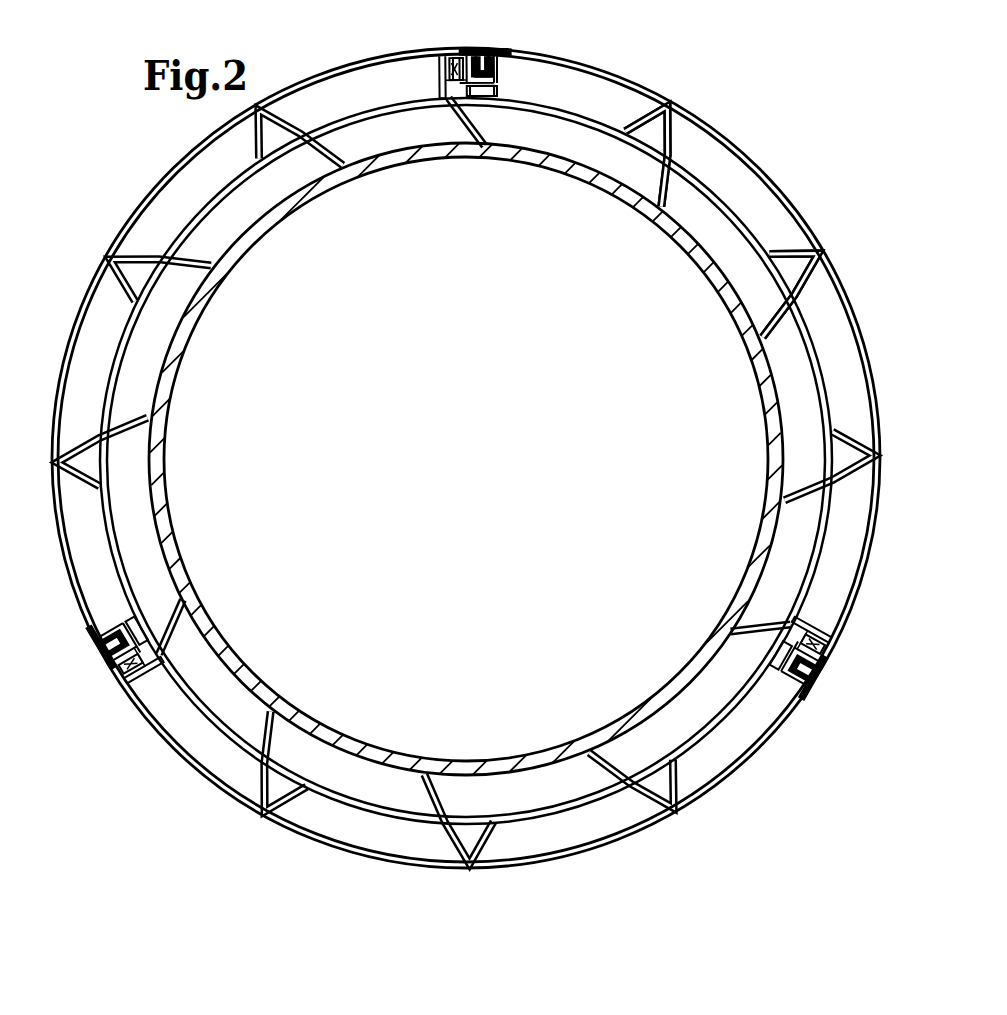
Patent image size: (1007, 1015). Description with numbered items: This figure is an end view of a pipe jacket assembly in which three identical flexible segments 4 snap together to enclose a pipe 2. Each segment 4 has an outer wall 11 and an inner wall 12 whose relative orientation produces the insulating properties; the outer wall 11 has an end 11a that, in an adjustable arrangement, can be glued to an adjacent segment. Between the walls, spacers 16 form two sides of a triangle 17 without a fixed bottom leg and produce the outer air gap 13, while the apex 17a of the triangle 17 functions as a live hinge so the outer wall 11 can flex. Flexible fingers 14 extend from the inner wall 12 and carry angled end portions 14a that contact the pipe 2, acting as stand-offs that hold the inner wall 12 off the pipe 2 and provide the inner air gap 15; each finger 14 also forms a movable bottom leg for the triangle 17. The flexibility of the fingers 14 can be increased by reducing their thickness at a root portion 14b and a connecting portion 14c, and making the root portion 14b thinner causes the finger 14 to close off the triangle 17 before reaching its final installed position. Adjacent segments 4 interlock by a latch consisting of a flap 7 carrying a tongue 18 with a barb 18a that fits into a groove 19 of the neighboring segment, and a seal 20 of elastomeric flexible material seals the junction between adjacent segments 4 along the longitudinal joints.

The pipe 2 is at (281, 223).
The segment 4 is at (146, 179).
The flap 7 is at (486, 55).
The outer wall 11 is at (766, 169).
The other end of outer wall 11a is at (505, 50).
The inner wall 12 is at (728, 209).
The outer air gap 13 is at (788, 237).
The flexible finger 14 is at (607, 186).
The angled end portion 14a is at (631, 204).
The root portion 14b is at (771, 255).
The connecting portion 14c is at (770, 290).
The inner air gap 15 is at (748, 236).
The spacer 16 is at (641, 122).
The triangle 17 is at (652, 130).
The apex 17a is at (817, 250).
The tongue 18 is at (466, 55).
The barb 18a is at (499, 70).
The groove 19 is at (493, 96).
The seal 20 is at (452, 68).